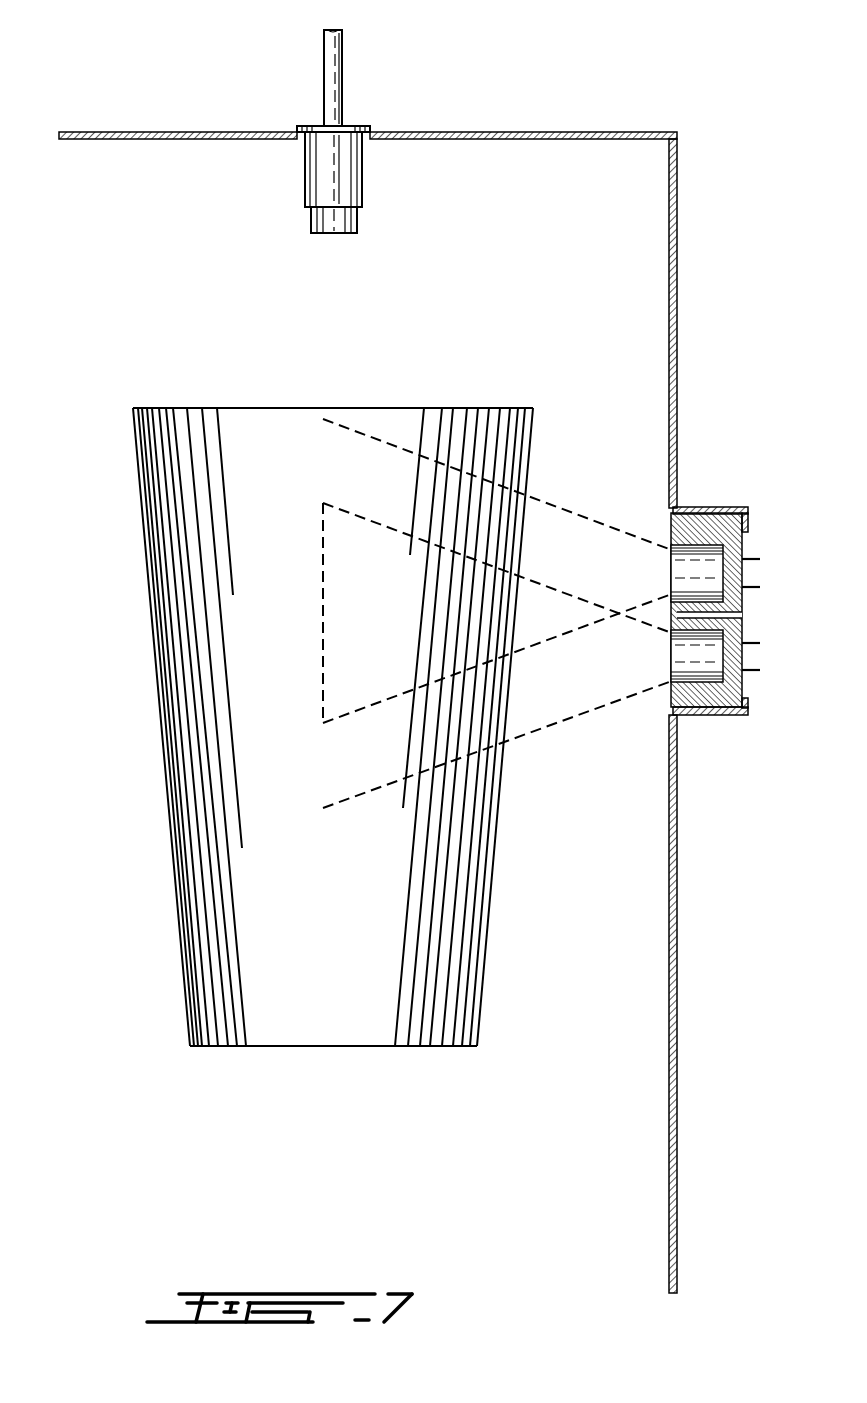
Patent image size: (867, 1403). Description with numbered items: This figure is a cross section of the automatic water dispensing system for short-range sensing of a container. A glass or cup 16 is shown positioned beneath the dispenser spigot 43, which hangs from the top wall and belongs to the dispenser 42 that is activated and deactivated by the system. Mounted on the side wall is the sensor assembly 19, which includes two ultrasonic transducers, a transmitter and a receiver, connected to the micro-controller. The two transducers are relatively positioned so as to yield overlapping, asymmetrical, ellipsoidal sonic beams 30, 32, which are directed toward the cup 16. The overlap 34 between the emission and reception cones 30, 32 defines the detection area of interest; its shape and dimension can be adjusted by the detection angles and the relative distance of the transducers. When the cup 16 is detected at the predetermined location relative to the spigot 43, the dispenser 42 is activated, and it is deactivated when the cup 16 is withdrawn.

The cup 16 is at (288, 973).
The sensor assembly 19 is at (707, 688).
The sonic beam 30 is at (588, 548).
The sonic beam 32 is at (586, 675).
The overlap 34 is at (323, 614).
The dispenser 42 is at (323, 79).
The dispenser spigot 43 is at (328, 185).